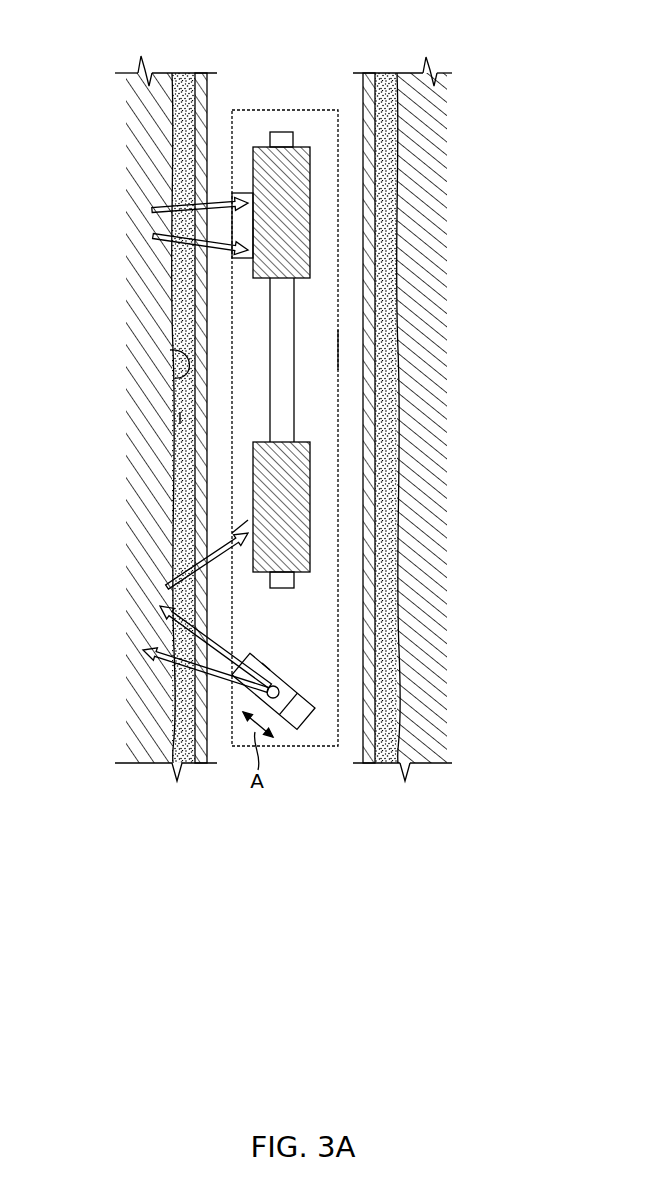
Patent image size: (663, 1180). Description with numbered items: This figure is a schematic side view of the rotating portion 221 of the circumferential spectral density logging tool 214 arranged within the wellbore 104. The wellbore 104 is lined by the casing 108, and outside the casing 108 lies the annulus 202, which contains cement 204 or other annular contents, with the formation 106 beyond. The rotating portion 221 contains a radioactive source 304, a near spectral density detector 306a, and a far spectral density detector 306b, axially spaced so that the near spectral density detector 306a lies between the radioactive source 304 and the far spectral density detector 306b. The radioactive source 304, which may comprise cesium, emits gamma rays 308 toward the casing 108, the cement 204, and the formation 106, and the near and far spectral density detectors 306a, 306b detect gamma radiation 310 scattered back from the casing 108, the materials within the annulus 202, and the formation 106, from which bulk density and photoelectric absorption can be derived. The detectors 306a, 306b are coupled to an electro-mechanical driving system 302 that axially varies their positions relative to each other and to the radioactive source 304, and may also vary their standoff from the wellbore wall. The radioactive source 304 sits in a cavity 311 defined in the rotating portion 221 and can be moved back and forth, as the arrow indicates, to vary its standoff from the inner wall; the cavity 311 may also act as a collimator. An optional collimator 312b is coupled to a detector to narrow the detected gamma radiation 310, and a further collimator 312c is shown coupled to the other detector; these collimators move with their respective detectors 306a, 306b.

The wellbore 104 is at (173, 158).
The formation 106 is at (158, 274).
The casing 108 is at (193, 308).
The annulus 202 is at (170, 350).
The cement 204 is at (180, 418).
The circumferential spectral density logging tool 214 is at (345, 124).
The rotating portion 221 is at (340, 350).
The electro-mechanical driving system 302 is at (283, 132).
The radioactive source 304 is at (316, 712).
The near spectral density detector 306a is at (310, 518).
The far spectral density detector 306b is at (310, 210).
The gamma rays 308 is at (180, 698).
The gamma radiation 310 is at (152, 208).
The cavity 311 is at (283, 676).
The collimator 312b is at (253, 547).
The shaft coupling 312c is at (240, 258).